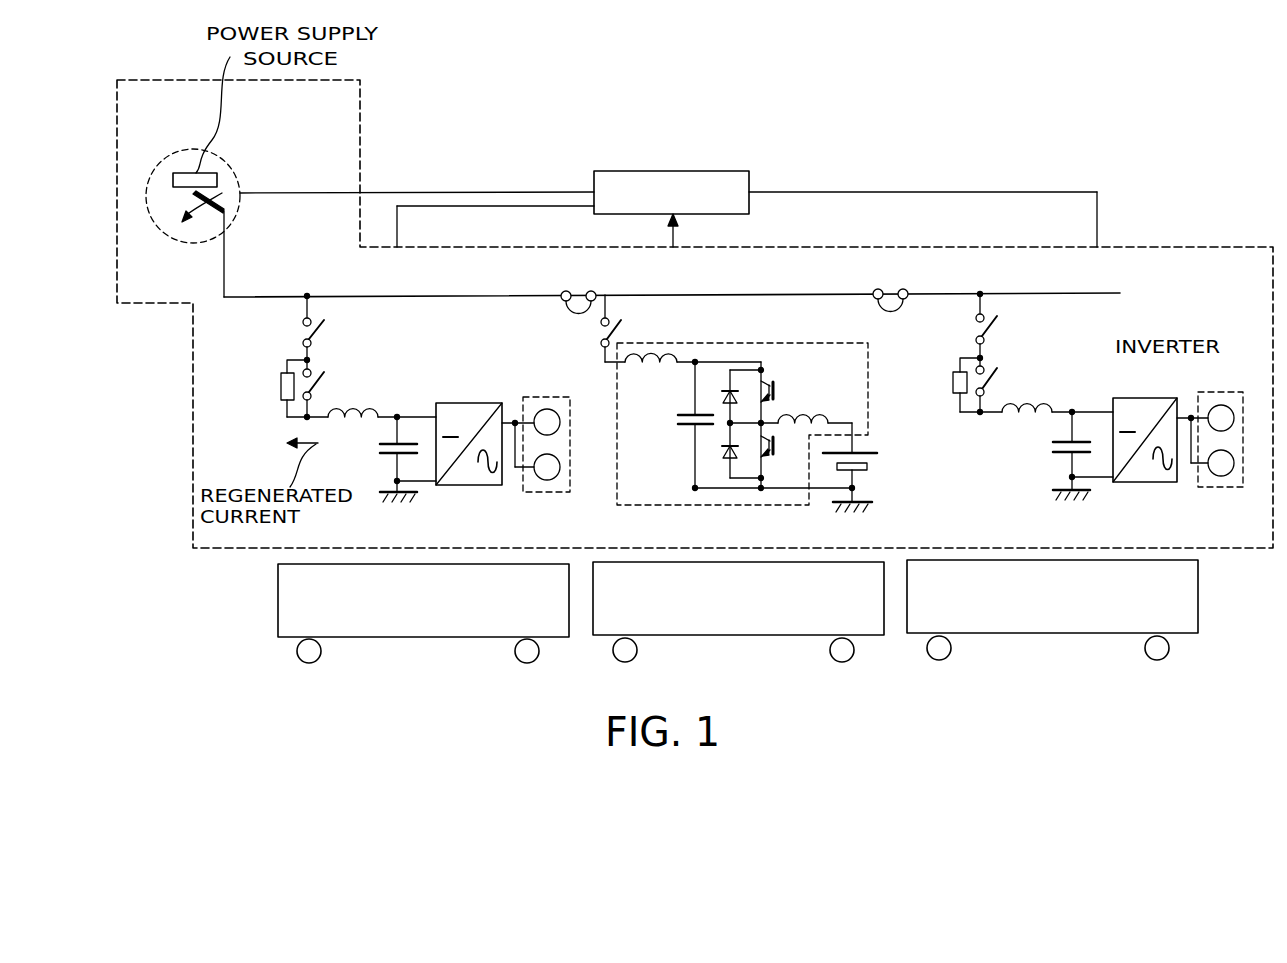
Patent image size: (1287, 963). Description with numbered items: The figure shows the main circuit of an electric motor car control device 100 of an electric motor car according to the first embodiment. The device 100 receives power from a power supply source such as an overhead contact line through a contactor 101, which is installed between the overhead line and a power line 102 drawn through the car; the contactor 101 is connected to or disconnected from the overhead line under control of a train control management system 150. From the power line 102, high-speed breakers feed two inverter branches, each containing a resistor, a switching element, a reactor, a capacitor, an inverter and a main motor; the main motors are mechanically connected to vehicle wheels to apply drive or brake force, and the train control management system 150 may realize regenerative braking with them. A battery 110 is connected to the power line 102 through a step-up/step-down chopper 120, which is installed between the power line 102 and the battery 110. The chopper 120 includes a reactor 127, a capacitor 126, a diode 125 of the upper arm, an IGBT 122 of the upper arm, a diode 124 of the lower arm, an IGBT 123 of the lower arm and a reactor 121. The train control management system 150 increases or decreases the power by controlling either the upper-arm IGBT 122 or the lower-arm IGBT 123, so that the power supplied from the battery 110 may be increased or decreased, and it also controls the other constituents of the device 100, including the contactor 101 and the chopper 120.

The electric motor car control device 100 is at (1130, 213).
The contactor 101 is at (227, 226).
The power line 102 is at (420, 295).
The battery 110 is at (862, 474).
The step-up/step-down chopper 120 is at (813, 342).
The reactor 121 is at (800, 409).
The IGBT of the upper arm 122 is at (775, 391).
The IGBT of the lower arm 123 is at (777, 452).
The diode of the lower arm 124 is at (727, 460).
The diode of the upper arm 125 is at (722, 394).
The capacitor 126 is at (688, 427).
The reactor 127 is at (632, 362).
The train control management system 150 is at (677, 170).